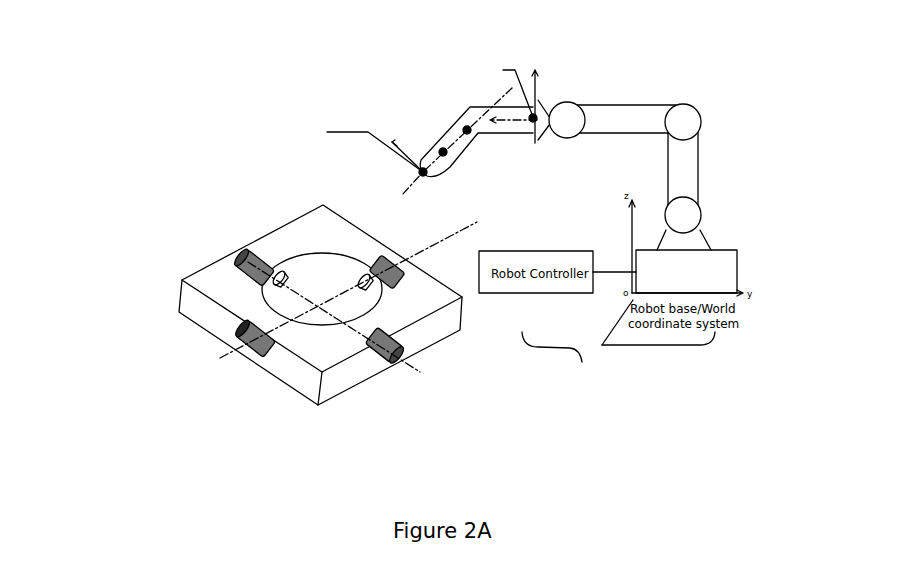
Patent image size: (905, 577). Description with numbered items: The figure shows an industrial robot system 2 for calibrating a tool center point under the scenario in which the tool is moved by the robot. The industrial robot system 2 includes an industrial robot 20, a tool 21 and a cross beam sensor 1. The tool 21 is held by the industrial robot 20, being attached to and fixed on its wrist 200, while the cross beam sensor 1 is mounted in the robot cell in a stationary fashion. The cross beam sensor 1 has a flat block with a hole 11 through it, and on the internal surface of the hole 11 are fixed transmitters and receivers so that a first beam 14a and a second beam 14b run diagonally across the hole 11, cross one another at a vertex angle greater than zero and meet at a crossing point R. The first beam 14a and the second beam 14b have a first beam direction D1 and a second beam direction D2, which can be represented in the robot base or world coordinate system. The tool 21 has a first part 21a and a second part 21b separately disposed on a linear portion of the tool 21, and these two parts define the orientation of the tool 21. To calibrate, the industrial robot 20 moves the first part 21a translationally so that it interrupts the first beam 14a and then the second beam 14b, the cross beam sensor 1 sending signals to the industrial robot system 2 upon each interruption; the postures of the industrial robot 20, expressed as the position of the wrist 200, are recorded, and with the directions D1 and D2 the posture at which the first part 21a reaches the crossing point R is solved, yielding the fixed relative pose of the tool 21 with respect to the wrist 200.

The cross beam sensor 1 is at (320, 238).
The hole 11 is at (307, 268).
The first beam 14a is at (253, 264).
The second beam 14b is at (275, 279).
The crossing point R is at (337, 300).
The first beam direction D1 is at (220, 358).
The second beam direction D2 is at (420, 372).
The wrist 200 is at (410, 99).
The tool 21 is at (408, 120).
The first part of the tool 21a is at (443, 152).
The second part of the tool 21b is at (423, 172).
The industrial robot 20 is at (737, 250).
The industrial robot system 2 is at (582, 362).